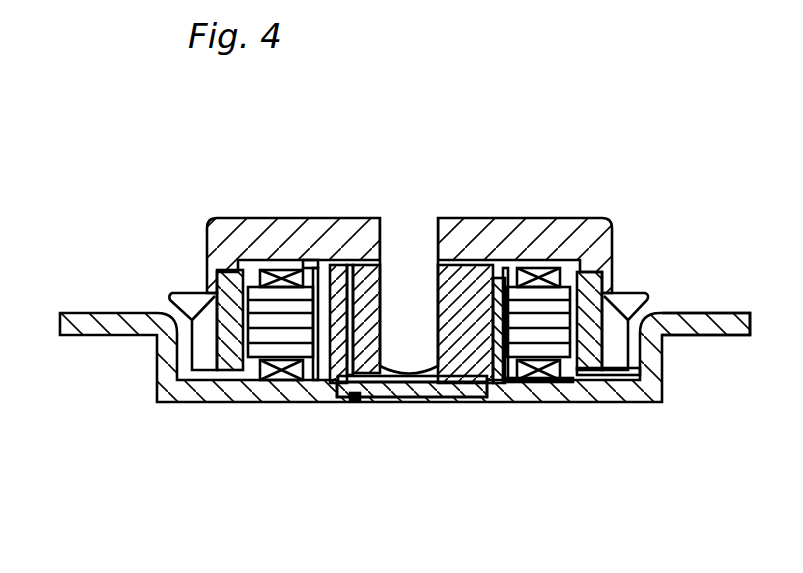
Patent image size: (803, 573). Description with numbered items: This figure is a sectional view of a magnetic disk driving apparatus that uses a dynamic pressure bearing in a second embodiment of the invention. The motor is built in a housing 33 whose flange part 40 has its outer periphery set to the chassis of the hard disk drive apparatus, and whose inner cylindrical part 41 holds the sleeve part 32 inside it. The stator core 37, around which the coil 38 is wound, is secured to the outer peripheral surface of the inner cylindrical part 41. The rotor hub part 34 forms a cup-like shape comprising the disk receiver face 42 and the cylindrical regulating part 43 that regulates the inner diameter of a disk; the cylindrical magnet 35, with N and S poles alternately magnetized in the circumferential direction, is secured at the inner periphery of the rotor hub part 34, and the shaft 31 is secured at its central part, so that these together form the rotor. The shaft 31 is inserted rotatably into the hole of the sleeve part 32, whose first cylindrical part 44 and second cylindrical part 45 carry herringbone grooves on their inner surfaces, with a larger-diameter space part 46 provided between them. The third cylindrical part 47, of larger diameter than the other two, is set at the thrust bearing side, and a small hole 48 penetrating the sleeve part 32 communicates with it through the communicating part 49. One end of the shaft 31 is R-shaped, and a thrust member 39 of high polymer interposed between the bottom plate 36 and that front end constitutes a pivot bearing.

The shaft 31 is at (410, 238).
The sleeve part 32 is at (480, 258).
The housing 33 is at (585, 385).
The rotor hub part 34 is at (587, 240).
The magnet 35 is at (600, 368).
The bottom plate 36 is at (447, 393).
The stator core 37 is at (604, 282).
The coil 38 is at (535, 380).
The thrust member 39 is at (388, 393).
The flange part 40 is at (668, 313).
The inner cylindrical part 41 is at (315, 335).
The disk receiver face 42 is at (182, 292).
The cylindrical regulating part 43 is at (205, 238).
The first cylindrical part 44 is at (357, 262).
The second cylindrical part 45 is at (302, 258).
The space part 46 is at (315, 278).
The third cylindrical part 47 is at (480, 393).
The hole 48 is at (340, 358).
The communicating part 49 is at (357, 395).